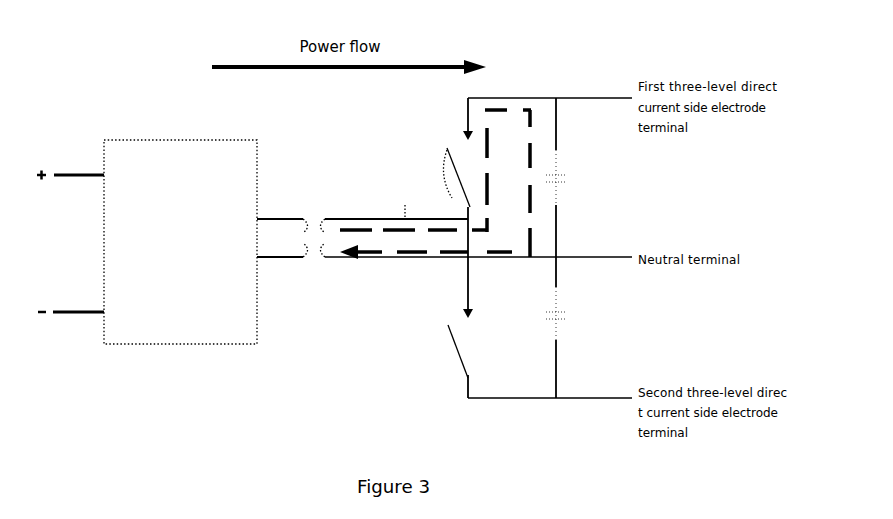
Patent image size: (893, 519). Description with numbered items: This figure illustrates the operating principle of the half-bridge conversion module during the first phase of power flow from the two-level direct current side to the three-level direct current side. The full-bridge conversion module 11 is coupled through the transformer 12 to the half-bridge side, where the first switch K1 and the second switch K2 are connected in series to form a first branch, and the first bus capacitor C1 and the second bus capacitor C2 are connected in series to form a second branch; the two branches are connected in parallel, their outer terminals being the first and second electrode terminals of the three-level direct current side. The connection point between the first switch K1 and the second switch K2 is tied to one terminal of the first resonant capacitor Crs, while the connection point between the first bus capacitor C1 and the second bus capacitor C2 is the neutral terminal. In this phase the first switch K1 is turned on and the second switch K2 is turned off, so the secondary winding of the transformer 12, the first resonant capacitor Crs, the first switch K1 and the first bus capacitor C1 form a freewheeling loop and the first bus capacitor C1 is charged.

The full-bridge conversion module 11 is at (187, 139).
The transformer 12 is at (326, 217).
The first resonant capacitor Crs is at (400, 204).
The first switch K1 is at (487, 178).
The second switch K2 is at (472, 327).
The first bus capacitor C1 is at (571, 177).
The second bus capacitor C2 is at (571, 327).